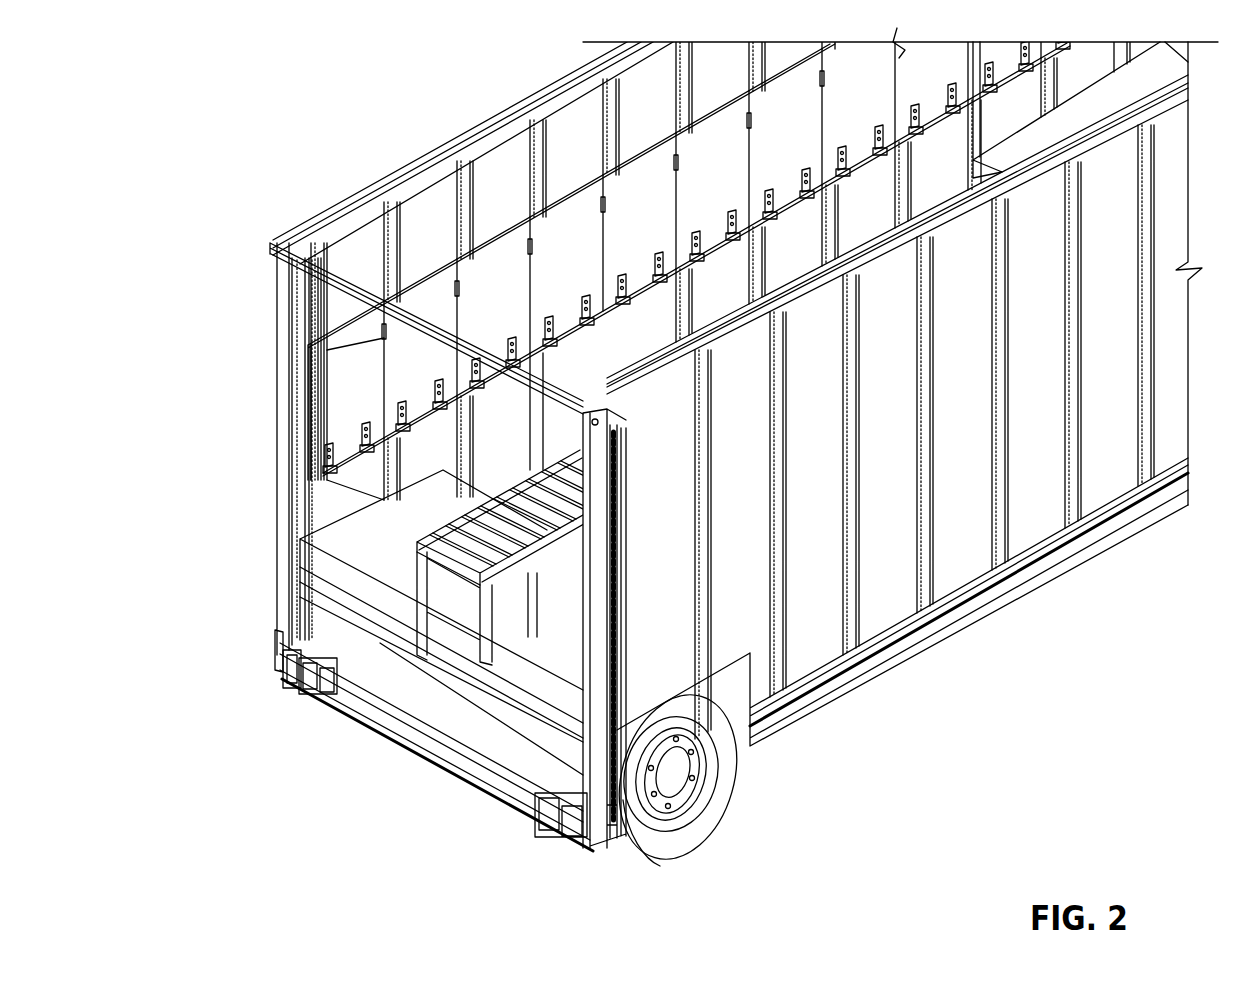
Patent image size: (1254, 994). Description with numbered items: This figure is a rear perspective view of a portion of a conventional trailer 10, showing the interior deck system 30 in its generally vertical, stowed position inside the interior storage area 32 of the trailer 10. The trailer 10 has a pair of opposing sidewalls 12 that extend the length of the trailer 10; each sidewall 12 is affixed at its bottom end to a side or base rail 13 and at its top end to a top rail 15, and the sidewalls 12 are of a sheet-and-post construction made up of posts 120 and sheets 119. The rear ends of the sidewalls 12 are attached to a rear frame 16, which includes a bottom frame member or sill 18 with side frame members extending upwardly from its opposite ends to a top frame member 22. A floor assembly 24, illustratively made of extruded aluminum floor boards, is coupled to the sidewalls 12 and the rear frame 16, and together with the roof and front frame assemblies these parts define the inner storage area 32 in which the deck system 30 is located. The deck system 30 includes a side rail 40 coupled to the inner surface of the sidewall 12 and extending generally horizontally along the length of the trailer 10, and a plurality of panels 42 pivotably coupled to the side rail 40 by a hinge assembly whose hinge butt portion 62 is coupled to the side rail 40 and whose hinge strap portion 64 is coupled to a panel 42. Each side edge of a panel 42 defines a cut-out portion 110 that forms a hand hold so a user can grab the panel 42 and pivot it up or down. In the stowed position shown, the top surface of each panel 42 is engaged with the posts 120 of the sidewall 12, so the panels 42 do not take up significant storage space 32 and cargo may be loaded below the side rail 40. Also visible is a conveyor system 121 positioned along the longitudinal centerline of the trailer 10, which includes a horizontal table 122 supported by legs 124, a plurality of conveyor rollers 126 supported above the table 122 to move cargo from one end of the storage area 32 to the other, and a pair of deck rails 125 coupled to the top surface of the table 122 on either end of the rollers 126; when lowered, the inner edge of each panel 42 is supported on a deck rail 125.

The trailer 10 is at (199, 70).
The sidewall 12 is at (363, 138).
The base rail 13 is at (813, 703).
The top rail 15 is at (623, 415).
The rear frame 16 is at (280, 471).
The sill 18 is at (480, 683).
The top frame member 22 is at (343, 297).
The floor assembly 24 is at (533, 662).
The deck system 30 is at (300, 386).
The interior storage area 32 is at (340, 393).
The side rail 40 is at (640, 296).
The panel 42 is at (590, 200).
The hinge butt portion 62 is at (808, 214).
The hinge strap portion 64 is at (660, 246).
The cut-out portion 110 is at (608, 200).
The sheet 119 is at (740, 87).
The post 120 is at (397, 203).
The conveyor system 121 is at (405, 580).
The table 122 is at (287, 658).
The legs 124 is at (457, 673).
The deck rail 125 is at (400, 547).
The conveyor rollers 126 is at (530, 480).